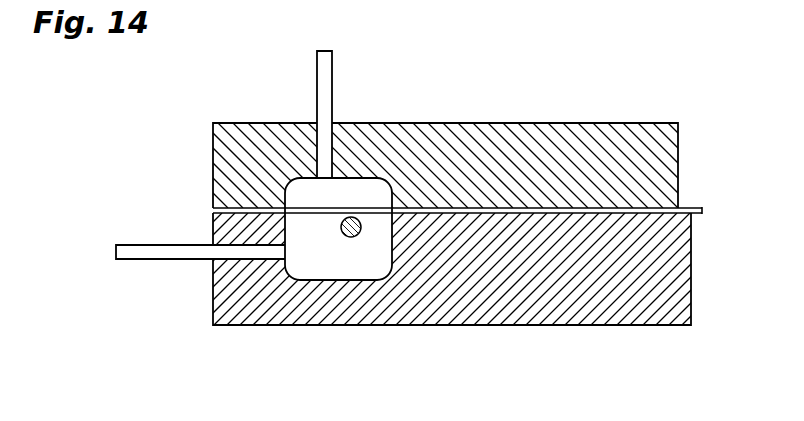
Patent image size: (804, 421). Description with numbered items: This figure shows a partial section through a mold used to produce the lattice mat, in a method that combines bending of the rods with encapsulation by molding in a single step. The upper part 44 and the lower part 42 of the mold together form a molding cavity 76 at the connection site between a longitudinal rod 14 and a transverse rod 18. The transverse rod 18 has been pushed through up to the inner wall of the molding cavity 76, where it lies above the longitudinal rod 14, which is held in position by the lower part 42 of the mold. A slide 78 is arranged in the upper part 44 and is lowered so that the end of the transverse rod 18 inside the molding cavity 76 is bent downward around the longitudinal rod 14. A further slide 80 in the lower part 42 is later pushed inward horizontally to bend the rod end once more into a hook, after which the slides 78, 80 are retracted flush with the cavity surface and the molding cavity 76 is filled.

The longitudinal rod 14 is at (353, 233).
The transverse rod 18 is at (687, 207).
The lower part of the mold 42 is at (588, 328).
The upper part of the mold 44 is at (592, 123).
The molding cavity 76 is at (313, 277).
The slide 78 is at (327, 95).
The slide 80 is at (167, 253).